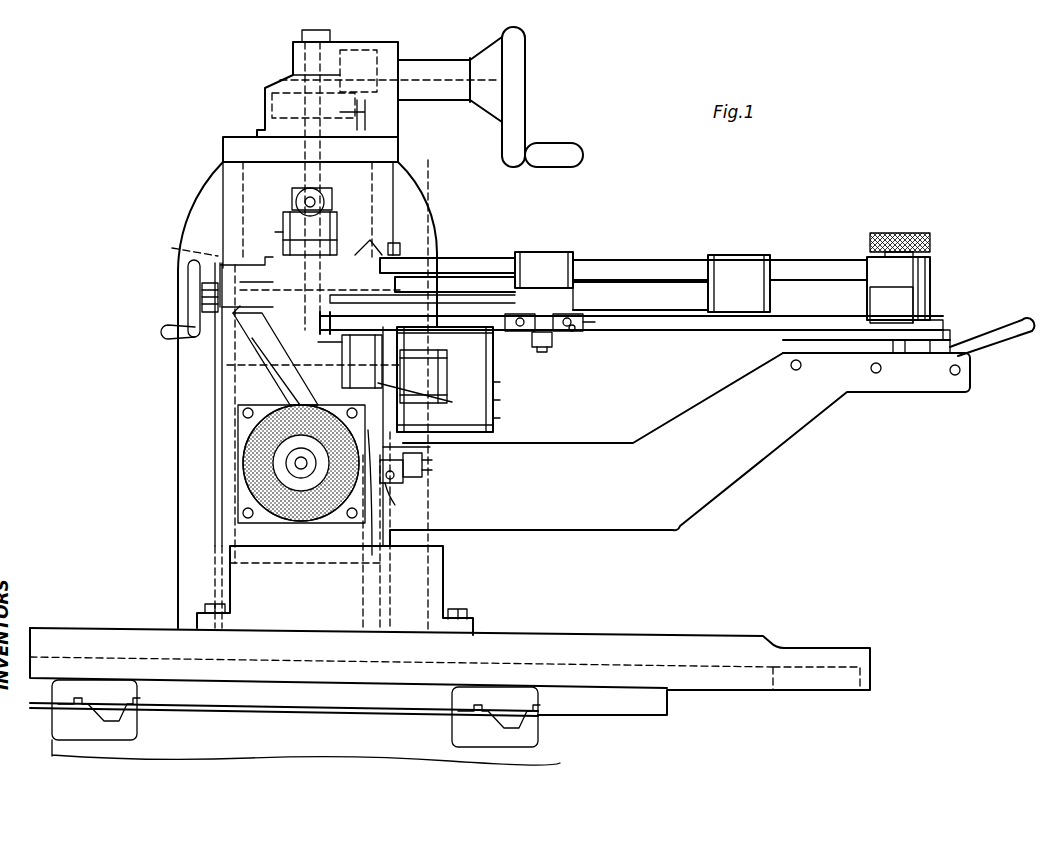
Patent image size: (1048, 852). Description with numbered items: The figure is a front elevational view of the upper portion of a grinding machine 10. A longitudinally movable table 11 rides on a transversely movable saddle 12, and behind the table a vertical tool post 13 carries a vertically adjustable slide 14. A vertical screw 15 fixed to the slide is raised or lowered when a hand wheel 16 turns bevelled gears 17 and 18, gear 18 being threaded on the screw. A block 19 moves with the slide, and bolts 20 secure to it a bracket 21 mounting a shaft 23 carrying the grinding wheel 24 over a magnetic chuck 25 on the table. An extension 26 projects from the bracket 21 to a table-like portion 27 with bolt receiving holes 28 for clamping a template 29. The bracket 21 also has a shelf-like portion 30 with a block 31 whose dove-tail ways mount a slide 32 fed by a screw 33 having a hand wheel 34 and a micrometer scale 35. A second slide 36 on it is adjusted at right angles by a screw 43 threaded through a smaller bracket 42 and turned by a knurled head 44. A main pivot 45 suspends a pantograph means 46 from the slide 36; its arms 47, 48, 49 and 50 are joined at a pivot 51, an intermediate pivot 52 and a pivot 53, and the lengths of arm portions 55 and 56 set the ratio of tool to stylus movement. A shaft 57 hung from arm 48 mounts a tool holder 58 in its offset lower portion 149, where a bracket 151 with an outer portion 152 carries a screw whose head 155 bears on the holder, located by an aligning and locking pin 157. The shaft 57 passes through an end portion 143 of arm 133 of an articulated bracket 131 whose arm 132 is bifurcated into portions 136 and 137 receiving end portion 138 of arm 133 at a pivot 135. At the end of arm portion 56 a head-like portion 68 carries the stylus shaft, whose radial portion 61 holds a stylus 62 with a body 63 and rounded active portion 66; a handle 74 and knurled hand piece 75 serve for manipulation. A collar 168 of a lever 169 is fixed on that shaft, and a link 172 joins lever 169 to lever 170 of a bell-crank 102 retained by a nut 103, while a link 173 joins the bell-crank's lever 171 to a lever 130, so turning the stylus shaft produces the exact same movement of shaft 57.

The grinding machine 10 is at (140, 572).
The table 11 is at (636, 636).
The saddle 12 is at (614, 708).
The tool post 13 is at (178, 210).
The slide 14 is at (280, 562).
The vertical screw 15 is at (305, 150).
The hand wheel 16 is at (510, 100).
The bevelled gear 17 is at (362, 70).
The bevelled gear 18 is at (292, 100).
The bed or block 19 is at (238, 432).
The bolts 20 is at (243, 413).
The bracket 21 is at (243, 488).
The shaft 23 is at (296, 463).
The grinding wheel 24 is at (243, 480).
The magnetic chuck 25 is at (452, 590).
The bracket or extension 26 is at (742, 500).
The table-like portion 27 is at (963, 353).
The bolt receiving holes 28 is at (800, 370).
The template 29 is at (818, 347).
The upper shelf-like portion 30 is at (275, 359).
The block or portion 31 is at (236, 317).
The slide 32 is at (246, 282).
The screw 33 is at (181, 247).
The hand wheel 34 is at (188, 275).
The micrometer scale 35 is at (202, 308).
The second slide 36 is at (345, 232).
The smaller bracket 42 is at (297, 193).
The screw 43 is at (297, 205).
The knurled head 44 is at (320, 193).
The main pivot 45 is at (280, 233).
The pantograph means 46 is at (662, 250).
The pantograph arm 47 is at (447, 266).
The pantograph arm 48 is at (455, 293).
The pantograph arm 49 is at (611, 272).
The pantograph arm 50 is at (611, 296).
The pivot 51 is at (400, 252).
The intermediate pivot 52 is at (548, 272).
The pivot 53 is at (740, 272).
The arm portion 55 is at (378, 245).
The arm portion 56 is at (818, 262).
The shaft 57 is at (422, 448).
The tool holder 58 is at (360, 548).
The radial portion 61 is at (950, 340).
The stylus 62 is at (905, 358).
The body 63 is at (930, 358).
The rounded or circular portion 66 is at (892, 355).
The head-like portion 68 is at (930, 280).
The handle 74 is at (1000, 324).
The knurled hand piece 75 is at (932, 240).
The bell-crank 102 is at (574, 333).
The nut 103 is at (542, 352).
The lever 130 is at (318, 342).
The articulated bracket 131 is at (512, 400).
The bracket arm 132 is at (512, 418).
The bracket arm 133 is at (428, 362).
The pivot 135 is at (512, 382).
The bifurcated portion 136 is at (490, 340).
The bifurcated portion 137 is at (495, 430).
The end portion 138 is at (428, 380).
The end portion 143 is at (352, 361).
The lower shaft portion 149 is at (405, 484).
The bracket or support 151 is at (432, 462).
The outer bracket portion 152 is at (430, 472).
The screw head 155 is at (432, 462).
The aligning and locking pin 157 is at (409, 505).
The collar or eye-like portion 168 is at (892, 301).
The lever 169 is at (932, 322).
The lever 170 is at (587, 331).
The lever 171 is at (522, 317).
The link 172 is at (716, 326).
The link 173 is at (422, 287).